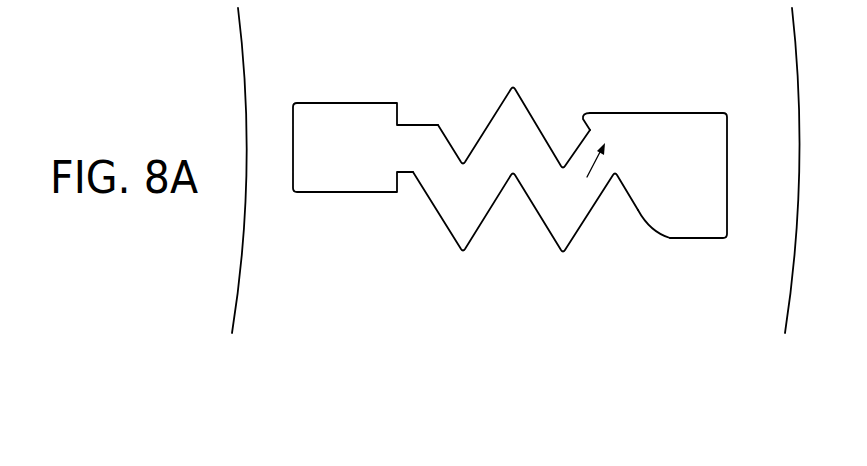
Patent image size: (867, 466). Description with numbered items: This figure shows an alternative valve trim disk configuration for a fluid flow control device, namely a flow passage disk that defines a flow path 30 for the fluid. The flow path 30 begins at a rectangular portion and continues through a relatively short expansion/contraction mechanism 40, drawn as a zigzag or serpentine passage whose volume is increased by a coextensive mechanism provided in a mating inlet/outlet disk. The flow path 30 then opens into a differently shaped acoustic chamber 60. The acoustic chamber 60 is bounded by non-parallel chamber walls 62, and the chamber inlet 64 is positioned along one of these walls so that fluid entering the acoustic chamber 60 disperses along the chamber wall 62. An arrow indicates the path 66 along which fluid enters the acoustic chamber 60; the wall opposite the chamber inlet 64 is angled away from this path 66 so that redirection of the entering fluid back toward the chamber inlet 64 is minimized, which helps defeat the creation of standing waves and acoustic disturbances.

The flow path 30 is at (460, 99).
The expansion/contraction mechanism 40 is at (517, 101).
The acoustic chamber 60 is at (702, 185).
The chamber wall 62 is at (673, 240).
The chamber inlet 64 is at (592, 117).
The path 66 is at (580, 188).